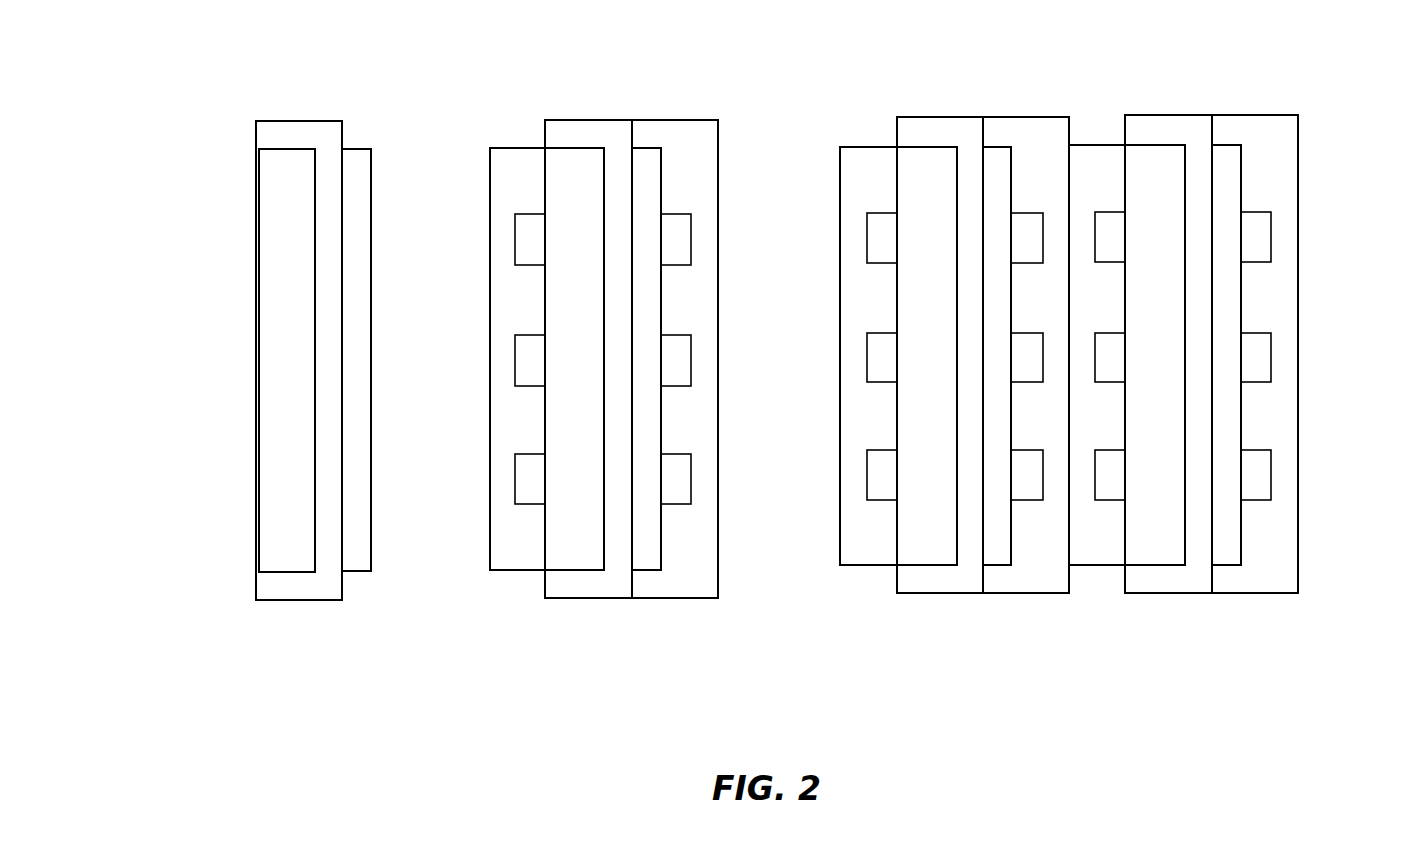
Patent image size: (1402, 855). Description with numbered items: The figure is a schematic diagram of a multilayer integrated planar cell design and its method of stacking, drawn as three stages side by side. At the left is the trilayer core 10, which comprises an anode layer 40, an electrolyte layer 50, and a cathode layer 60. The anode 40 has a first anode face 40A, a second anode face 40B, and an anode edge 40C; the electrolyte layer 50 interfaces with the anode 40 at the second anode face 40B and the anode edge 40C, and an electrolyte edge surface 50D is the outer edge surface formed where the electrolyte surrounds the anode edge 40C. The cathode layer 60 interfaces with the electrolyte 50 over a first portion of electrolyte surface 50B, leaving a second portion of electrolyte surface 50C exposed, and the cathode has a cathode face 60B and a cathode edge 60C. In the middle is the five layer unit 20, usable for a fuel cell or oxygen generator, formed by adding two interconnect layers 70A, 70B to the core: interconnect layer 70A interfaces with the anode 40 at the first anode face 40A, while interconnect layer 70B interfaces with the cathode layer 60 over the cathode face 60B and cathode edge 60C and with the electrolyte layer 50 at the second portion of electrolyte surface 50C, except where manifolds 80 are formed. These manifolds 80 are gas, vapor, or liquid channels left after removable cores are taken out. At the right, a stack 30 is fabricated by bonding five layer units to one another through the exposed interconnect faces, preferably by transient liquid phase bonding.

The trilayer core 10 is at (337, 640).
The five layer unit 20 is at (620, 630).
The stack 30 is at (1087, 645).
The anode layer 40 is at (270, 200).
The first anode face 40A is at (258, 297).
The second anode face 40B is at (316, 372).
The anode edge 40C is at (270, 148).
The electrolyte layer 50 is at (303, 120).
The first portion of electrolyte surface 50B is at (345, 374).
The second portion of electrolyte surface 50C is at (345, 128).
The electrolyte edge surface 50D is at (275, 119).
The cathode layer 60 is at (360, 232).
The cathode face 60B is at (372, 452).
The cathode edge 60C is at (357, 148).
The interconnect layer 70A is at (505, 170).
The interconnect layer 70B is at (700, 283).
The manifolds 80 is at (521, 253).